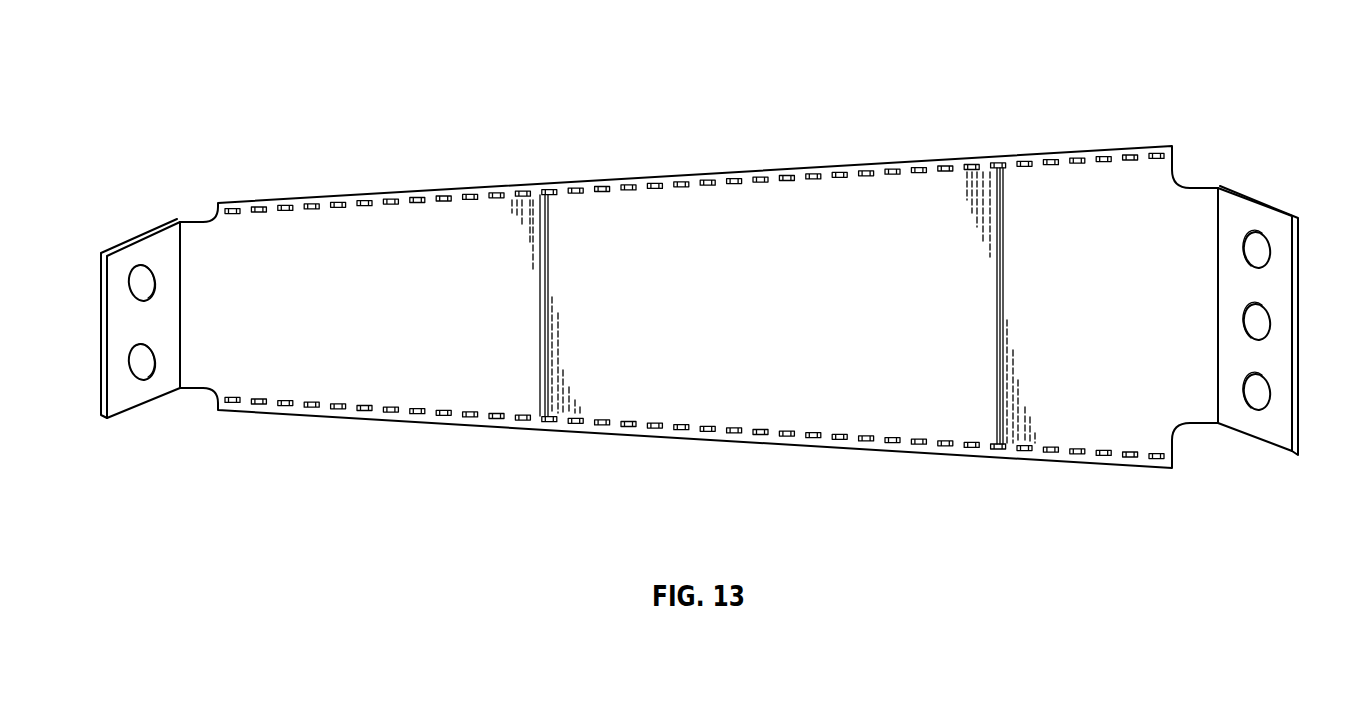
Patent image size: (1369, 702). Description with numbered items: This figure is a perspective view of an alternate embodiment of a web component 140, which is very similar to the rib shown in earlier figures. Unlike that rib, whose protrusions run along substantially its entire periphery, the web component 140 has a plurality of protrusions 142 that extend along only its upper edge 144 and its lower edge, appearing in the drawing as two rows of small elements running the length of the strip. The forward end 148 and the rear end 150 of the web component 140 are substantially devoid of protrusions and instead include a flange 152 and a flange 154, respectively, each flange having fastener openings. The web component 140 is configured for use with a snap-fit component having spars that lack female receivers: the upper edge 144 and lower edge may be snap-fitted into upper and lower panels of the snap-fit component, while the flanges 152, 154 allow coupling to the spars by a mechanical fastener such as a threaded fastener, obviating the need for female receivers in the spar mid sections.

The web component 140 is at (445, 84).
The protrusions 142 is at (418, 205).
The upper edge 144 is at (1113, 143).
The forward end 148 is at (193, 237).
The rear end 150 is at (1207, 200).
The flange 152 is at (118, 332).
The flange 154 is at (1282, 295).